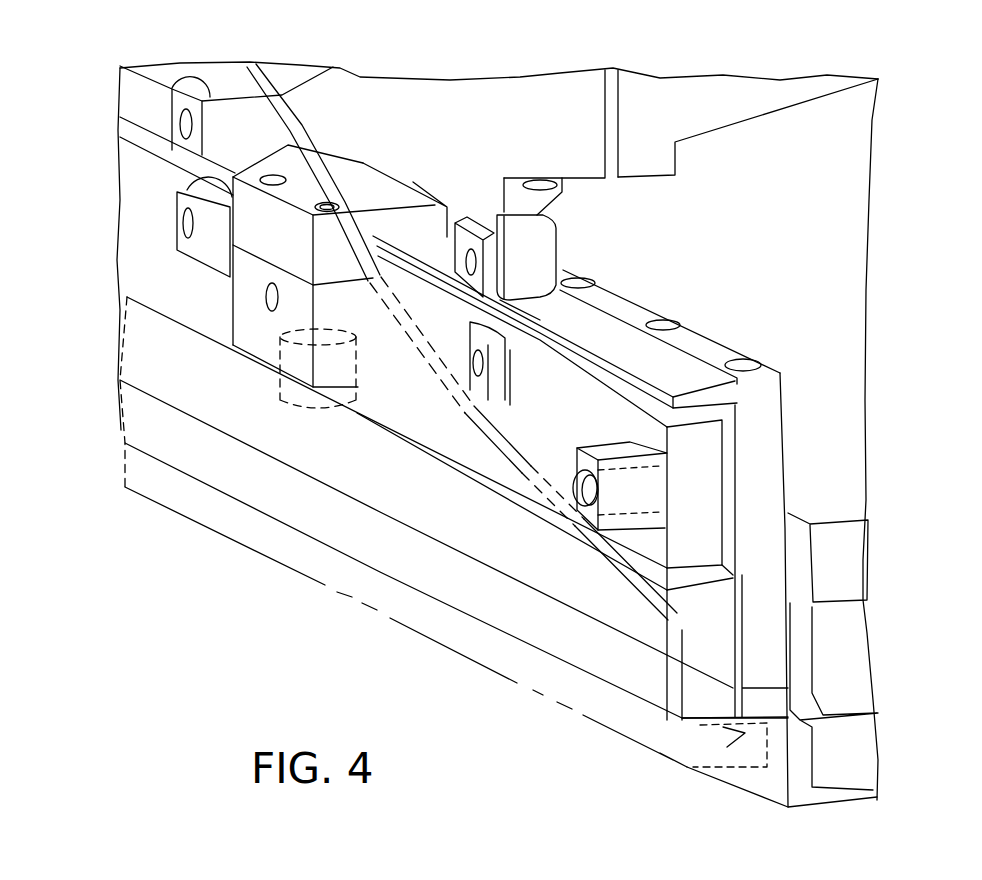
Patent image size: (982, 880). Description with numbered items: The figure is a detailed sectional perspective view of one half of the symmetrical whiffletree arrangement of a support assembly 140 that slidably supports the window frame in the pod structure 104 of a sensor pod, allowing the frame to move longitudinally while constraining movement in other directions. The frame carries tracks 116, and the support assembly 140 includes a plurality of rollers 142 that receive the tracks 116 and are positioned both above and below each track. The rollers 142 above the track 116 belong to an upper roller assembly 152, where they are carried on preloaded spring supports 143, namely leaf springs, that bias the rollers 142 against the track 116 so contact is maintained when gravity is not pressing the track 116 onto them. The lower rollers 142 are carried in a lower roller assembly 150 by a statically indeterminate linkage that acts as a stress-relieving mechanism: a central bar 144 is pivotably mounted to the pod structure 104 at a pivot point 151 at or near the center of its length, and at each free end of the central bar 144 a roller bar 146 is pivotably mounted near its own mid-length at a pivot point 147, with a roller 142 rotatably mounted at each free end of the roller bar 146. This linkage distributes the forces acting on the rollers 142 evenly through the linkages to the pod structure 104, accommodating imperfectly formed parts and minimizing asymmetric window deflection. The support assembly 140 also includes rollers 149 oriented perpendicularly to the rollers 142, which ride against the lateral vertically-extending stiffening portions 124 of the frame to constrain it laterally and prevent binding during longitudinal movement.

The pod structure 104 is at (290, 157).
The tracks 116 is at (700, 392).
The lateral vertically-extending stiffening portions 124 is at (757, 462).
The support assembly 140 is at (333, 615).
The rollers 142 is at (508, 232).
The spring supports 143 is at (427, 245).
The central bar 144 is at (572, 392).
The roller bar 146 is at (203, 242).
The pivot point 147 is at (357, 250).
The rollers 149 is at (335, 375).
The lower roller assembly 150 is at (695, 540).
The pivot point 151 is at (640, 490).
The upper roller assembly 152 is at (340, 136).